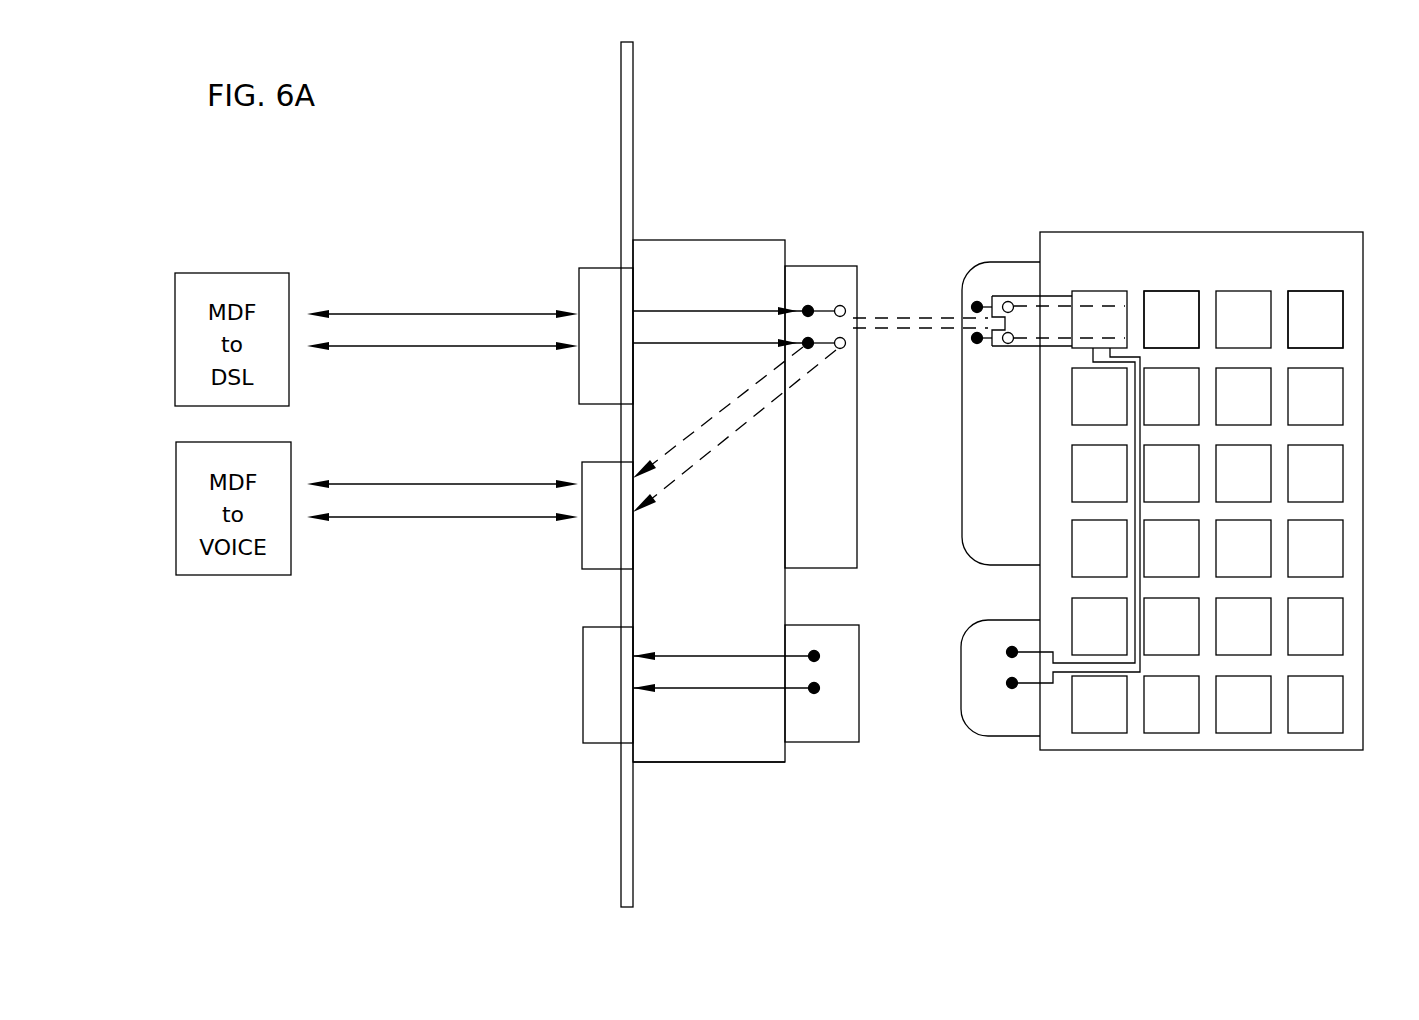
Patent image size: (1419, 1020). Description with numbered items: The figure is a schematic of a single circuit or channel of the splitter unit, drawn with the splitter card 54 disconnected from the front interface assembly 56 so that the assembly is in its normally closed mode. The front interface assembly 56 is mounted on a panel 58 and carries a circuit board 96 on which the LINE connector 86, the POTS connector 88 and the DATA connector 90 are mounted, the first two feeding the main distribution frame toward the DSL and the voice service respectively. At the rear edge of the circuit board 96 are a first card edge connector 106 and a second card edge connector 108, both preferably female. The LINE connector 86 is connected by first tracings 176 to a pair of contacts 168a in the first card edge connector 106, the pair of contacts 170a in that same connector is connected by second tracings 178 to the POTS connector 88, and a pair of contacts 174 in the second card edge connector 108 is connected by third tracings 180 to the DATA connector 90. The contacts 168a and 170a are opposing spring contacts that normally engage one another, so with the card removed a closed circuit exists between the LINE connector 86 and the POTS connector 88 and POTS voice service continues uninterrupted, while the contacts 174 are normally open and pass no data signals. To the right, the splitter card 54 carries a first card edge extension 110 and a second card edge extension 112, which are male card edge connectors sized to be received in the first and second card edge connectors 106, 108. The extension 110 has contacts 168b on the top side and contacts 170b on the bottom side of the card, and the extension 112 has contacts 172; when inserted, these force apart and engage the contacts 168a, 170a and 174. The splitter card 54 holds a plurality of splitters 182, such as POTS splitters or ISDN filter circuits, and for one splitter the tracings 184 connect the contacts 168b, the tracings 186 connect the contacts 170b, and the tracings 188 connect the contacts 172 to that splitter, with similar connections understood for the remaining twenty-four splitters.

The splitter card 54 is at (1191, 788).
The front interface assembly 56 is at (698, 790).
The mounting panel 58 is at (633, 78).
The LINE connector 86 is at (578, 276).
The POTS connector 88 is at (581, 462).
The DATA connector 90 is at (582, 632).
The circuit board 96 is at (706, 240).
The first card edge connector 106 is at (838, 266).
The second card edge connector 108 is at (843, 743).
The first card edge extension 110 is at (962, 556).
The second card edge extension 112 is at (966, 727).
The contacts 168a is at (809, 305).
The contacts 168b is at (975, 304).
The contacts 170a is at (846, 309).
The contacts 170b is at (1007, 300).
The contacts 172 is at (1010, 647).
The contacts 174 is at (816, 650).
The first tracings 176 is at (680, 311).
The second tracings 178 is at (718, 455).
The third tracings 180 is at (710, 656).
The splitters 182 is at (1126, 290).
The tracings 184 is at (1052, 296).
The tracings 186 is at (1097, 305).
The tracings 188 is at (1141, 434).